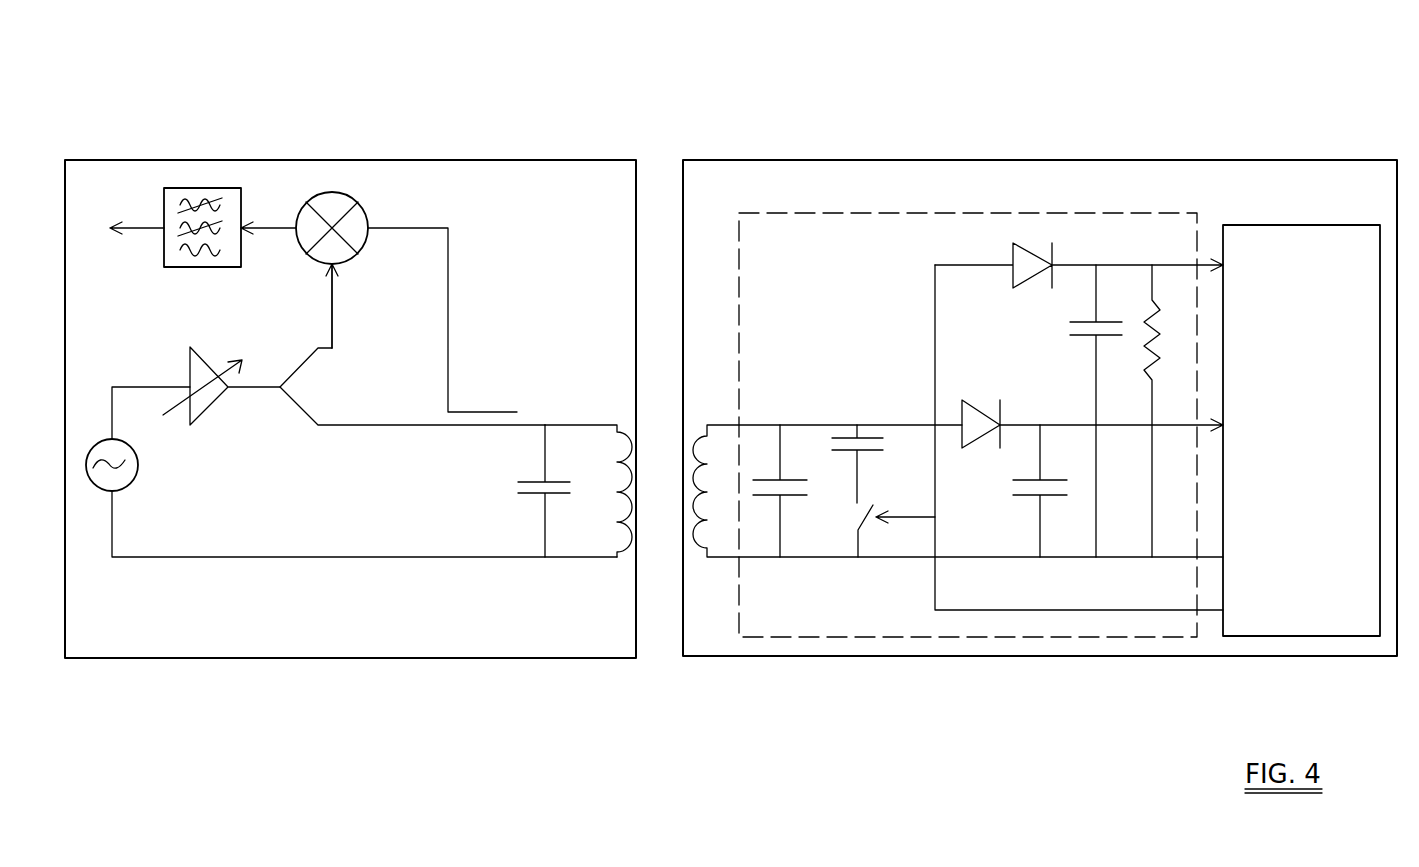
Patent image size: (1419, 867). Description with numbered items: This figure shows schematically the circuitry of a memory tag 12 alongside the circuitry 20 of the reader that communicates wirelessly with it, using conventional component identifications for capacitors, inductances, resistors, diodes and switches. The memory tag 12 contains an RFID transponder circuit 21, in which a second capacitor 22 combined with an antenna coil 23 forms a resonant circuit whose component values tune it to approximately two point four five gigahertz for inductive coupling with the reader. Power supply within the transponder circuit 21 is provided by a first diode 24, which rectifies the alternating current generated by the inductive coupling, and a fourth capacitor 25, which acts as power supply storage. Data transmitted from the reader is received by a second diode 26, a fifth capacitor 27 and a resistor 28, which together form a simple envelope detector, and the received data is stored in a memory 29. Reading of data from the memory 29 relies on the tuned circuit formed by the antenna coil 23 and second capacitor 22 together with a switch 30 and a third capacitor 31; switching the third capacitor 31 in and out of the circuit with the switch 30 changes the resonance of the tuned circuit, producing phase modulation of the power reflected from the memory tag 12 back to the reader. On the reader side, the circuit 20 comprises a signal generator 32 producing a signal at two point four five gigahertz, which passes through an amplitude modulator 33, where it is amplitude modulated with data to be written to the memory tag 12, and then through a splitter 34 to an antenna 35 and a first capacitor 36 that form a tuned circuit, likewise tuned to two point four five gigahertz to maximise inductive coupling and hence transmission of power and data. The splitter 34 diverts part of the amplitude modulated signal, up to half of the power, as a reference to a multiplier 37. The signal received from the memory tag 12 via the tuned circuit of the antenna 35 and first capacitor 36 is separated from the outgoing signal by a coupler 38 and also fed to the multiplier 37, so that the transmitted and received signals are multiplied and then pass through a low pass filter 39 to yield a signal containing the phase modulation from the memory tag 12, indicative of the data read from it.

The memory tag 12 is at (1267, 132).
The circuitry of the reader 20 is at (541, 160).
The RFID transponder circuit 21 is at (1098, 637).
The capacitor C2 22 is at (785, 538).
The antenna coil L2 23 is at (700, 548).
The diode D1 24 is at (975, 440).
The capacitor C4 25 is at (1022, 500).
The diode D2 26 is at (1012, 258).
The capacitor C5 27 is at (1090, 320).
The resistor R1 28 is at (1160, 305).
The memory 29 is at (1301, 430).
The switch S1 30 is at (872, 525).
The capacitor C3 31 is at (843, 436).
The signal generator 32 is at (104, 490).
The amplitude modulator 33 is at (185, 362).
The splitter 34 is at (302, 360).
The antenna L1 35 is at (627, 548).
The capacitor C1 36 is at (560, 497).
The multiplier 37 is at (330, 205).
The coupler 38 is at (493, 418).
The low pass filter 39 is at (212, 200).